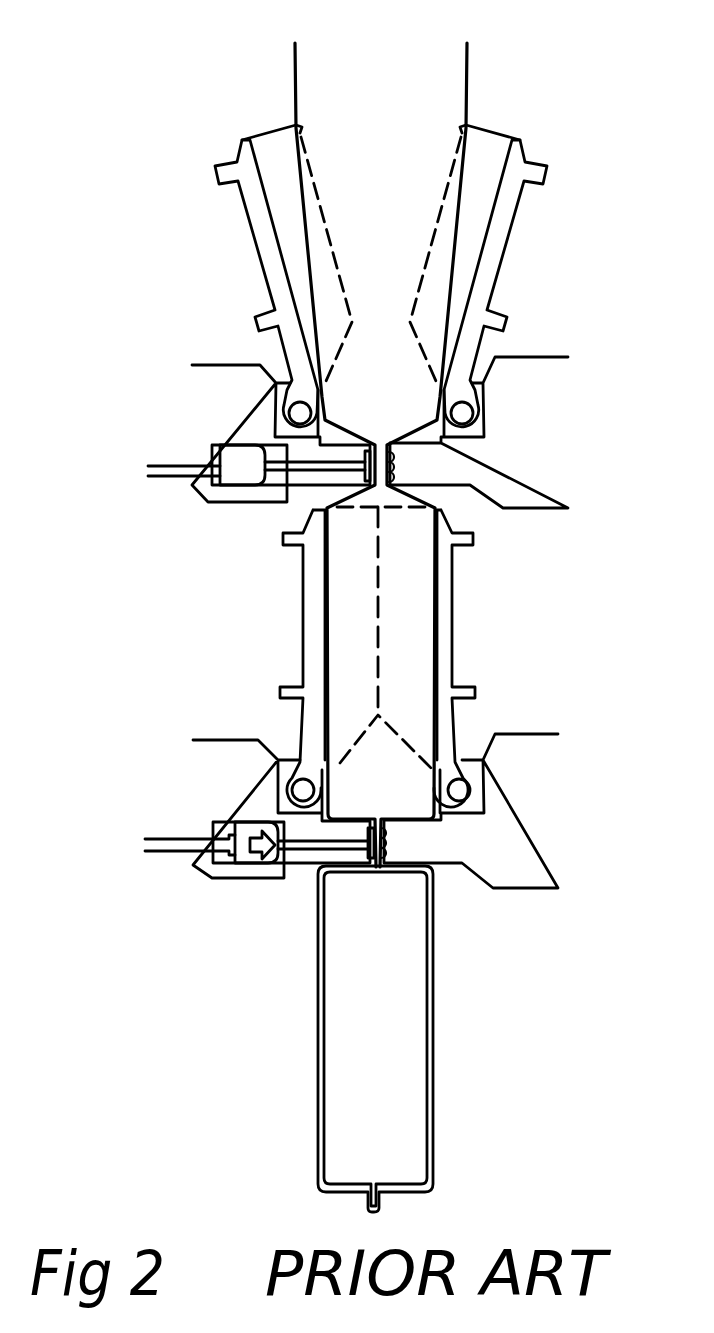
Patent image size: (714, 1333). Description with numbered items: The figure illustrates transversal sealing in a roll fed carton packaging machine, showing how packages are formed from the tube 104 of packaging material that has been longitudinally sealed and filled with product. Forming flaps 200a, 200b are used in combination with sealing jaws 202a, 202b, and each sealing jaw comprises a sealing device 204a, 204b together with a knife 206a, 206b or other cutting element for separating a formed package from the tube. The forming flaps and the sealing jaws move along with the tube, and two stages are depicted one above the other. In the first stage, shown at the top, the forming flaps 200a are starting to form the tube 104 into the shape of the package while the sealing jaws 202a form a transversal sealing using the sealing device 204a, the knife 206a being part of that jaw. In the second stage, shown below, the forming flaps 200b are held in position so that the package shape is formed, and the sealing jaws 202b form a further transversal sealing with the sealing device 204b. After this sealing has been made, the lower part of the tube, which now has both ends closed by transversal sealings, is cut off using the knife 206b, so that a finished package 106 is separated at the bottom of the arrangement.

The tube 104 is at (417, 95).
The forming flaps 200a is at (255, 223).
The sealing jaw 202a is at (213, 383).
The sealing device 204a is at (390, 470).
The knife 206a is at (307, 466).
The forming flaps 200b is at (312, 613).
The sealing jaw 202b is at (213, 767).
The sealing device 204b is at (388, 852).
The knife 206b is at (318, 837).
The package 106 is at (393, 1045).